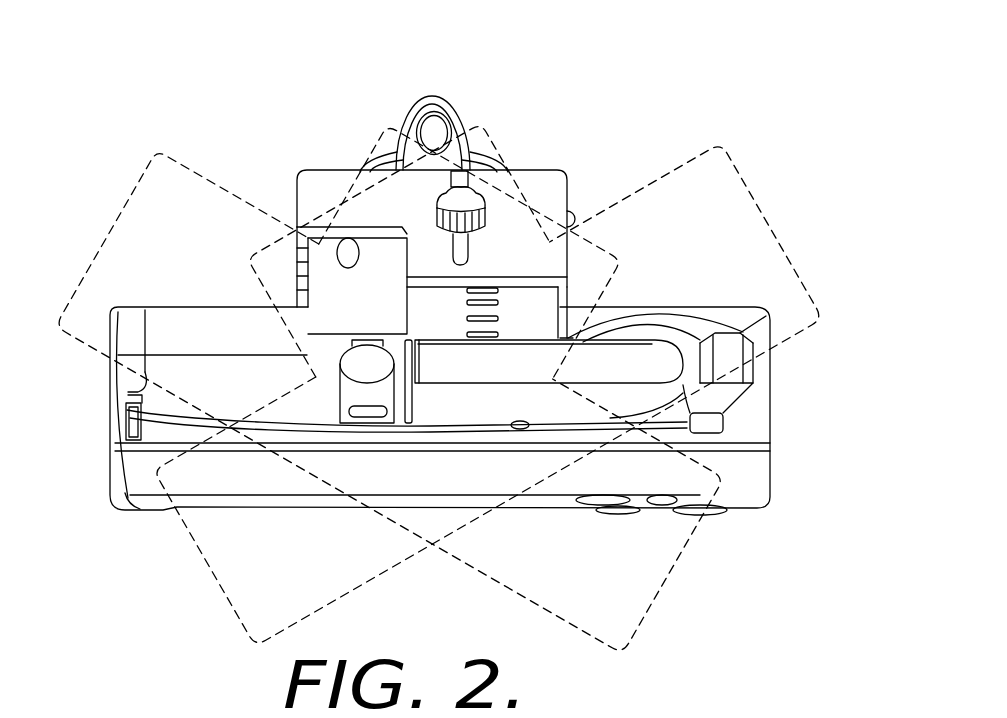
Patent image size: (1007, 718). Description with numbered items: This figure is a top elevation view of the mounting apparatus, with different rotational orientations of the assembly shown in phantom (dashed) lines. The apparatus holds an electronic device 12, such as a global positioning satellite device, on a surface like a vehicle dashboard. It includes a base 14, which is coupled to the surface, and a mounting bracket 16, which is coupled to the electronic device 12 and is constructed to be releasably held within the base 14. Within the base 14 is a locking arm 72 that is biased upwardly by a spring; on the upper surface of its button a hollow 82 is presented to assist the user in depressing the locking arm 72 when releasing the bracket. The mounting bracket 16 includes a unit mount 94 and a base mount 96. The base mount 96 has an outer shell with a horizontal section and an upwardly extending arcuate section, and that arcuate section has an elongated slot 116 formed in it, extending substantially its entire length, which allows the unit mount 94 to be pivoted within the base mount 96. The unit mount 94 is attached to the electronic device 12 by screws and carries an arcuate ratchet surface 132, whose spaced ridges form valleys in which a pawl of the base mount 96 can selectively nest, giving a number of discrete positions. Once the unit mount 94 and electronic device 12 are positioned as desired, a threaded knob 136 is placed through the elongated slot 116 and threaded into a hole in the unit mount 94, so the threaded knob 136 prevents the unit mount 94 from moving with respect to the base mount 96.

The electronic device 12 is at (770, 432).
The base 14 is at (500, 155).
The mounting bracket 16 is at (570, 180).
The locking arm 72 is at (457, 106).
The hollow 82 is at (423, 113).
The unit mount 94 is at (318, 278).
The base mount 96 is at (318, 177).
The elongated slot 116 is at (465, 250).
The arcuate ratchet surface 132 is at (498, 323).
The threaded knob 136 is at (437, 211).